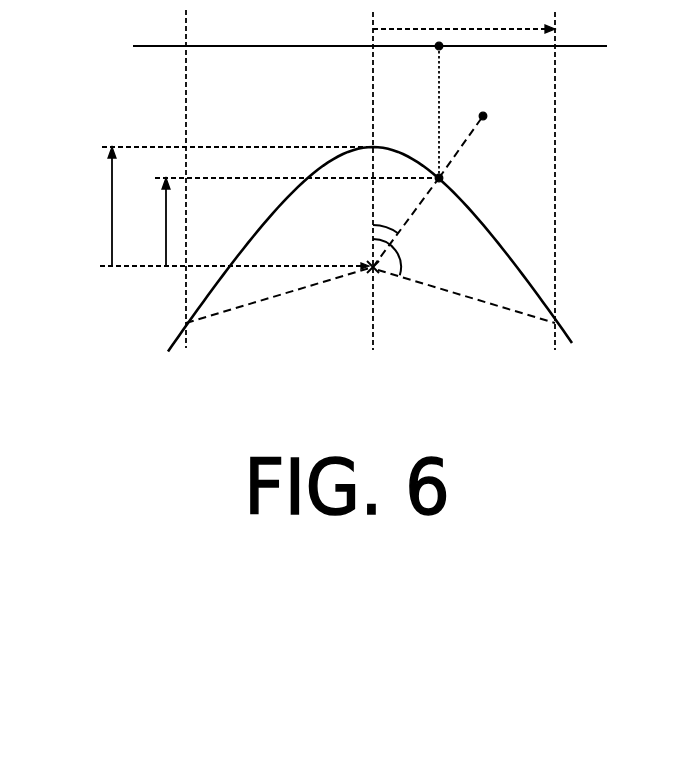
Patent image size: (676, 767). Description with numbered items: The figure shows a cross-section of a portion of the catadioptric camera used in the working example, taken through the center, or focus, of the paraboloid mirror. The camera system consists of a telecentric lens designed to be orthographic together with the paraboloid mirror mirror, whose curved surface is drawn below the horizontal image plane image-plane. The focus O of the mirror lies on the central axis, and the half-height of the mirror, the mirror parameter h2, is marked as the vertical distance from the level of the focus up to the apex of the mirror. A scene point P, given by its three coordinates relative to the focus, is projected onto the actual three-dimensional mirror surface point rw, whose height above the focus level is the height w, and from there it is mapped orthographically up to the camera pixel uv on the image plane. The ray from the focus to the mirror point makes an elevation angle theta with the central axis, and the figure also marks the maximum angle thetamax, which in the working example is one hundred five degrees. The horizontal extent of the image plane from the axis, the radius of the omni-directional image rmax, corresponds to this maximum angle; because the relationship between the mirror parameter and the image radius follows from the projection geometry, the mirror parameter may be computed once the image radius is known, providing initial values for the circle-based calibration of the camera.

The image plane image-plane is at (370, 29).
The radius of the omni-directional image rmax is at (464, 16).
The camera pixel (u', v') uv is at (482, 110).
The point P is at (473, 141).
The point on the mirror surface (r, w') rw is at (481, 176).
The paraboloid mirror is at (347, 261).
The mirror parameter h/2 h2 is at (217, 206).
The height w' w is at (283, 222).
The focus O is at (359, 280).
The angle theta is at (385, 210).
The maximum angle theta_max thetamax is at (410, 259).